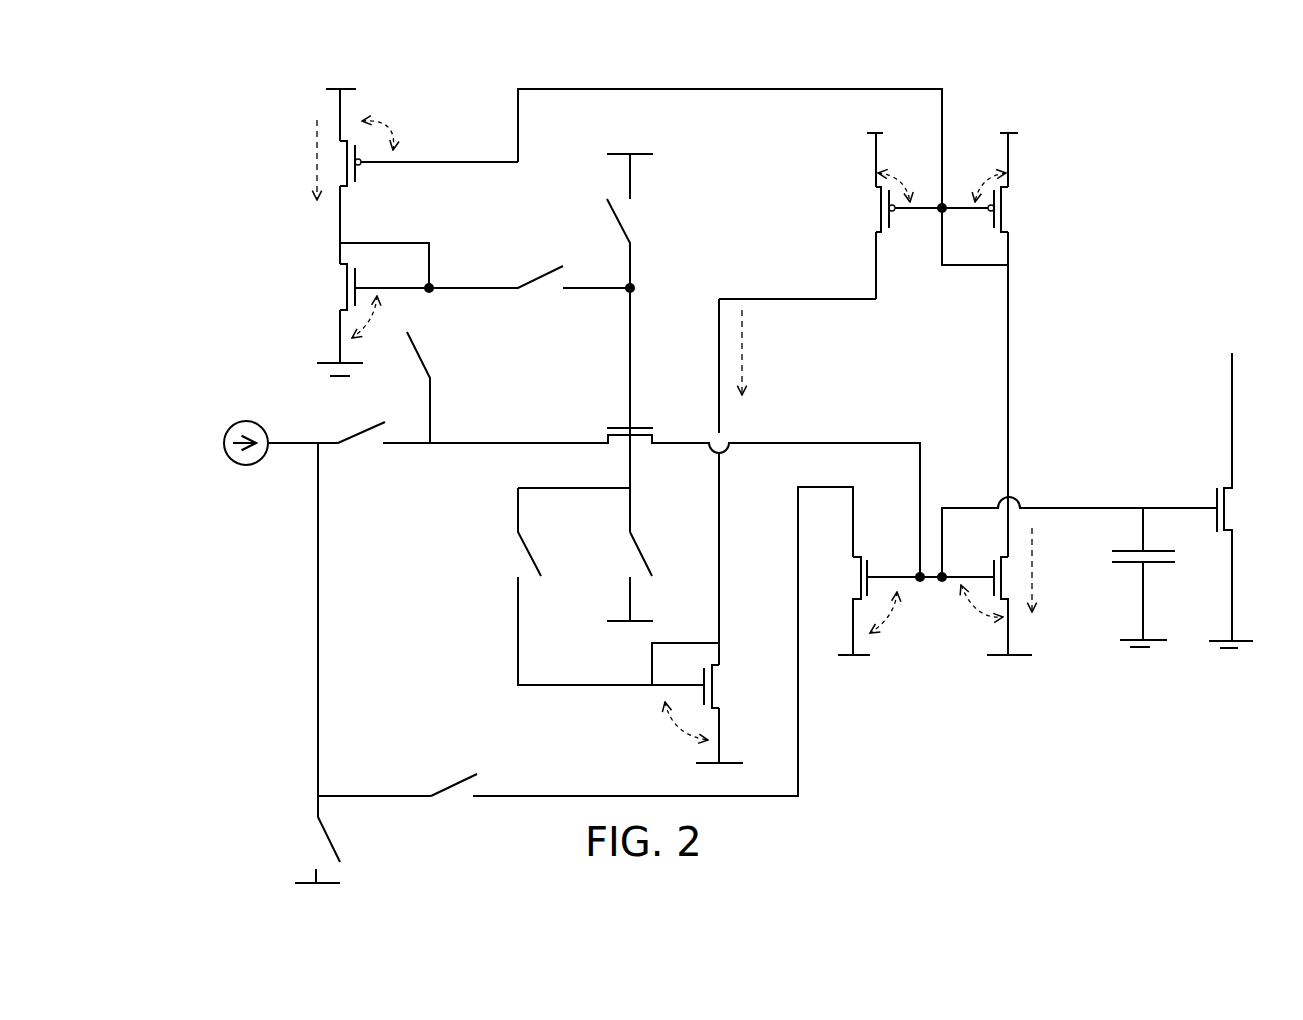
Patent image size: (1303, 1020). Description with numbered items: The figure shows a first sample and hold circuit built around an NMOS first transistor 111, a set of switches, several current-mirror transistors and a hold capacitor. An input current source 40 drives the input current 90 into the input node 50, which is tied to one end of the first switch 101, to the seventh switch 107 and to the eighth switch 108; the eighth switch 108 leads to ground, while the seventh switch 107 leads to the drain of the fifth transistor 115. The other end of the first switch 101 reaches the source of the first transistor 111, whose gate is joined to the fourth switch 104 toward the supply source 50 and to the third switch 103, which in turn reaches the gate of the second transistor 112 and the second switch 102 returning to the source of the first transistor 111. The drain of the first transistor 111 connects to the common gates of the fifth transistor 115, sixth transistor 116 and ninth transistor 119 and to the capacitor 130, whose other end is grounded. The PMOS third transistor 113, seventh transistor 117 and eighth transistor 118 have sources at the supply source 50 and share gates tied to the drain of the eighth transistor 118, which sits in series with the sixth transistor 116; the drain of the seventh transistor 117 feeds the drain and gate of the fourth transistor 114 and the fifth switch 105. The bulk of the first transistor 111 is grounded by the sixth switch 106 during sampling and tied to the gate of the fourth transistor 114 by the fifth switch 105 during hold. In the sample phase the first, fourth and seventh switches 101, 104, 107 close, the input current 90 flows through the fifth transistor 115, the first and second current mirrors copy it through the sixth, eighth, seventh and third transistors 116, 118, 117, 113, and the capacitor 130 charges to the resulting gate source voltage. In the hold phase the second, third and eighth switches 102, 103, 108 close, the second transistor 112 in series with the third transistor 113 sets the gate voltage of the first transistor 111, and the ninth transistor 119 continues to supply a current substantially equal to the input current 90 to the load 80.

The input current source 40 is at (246, 419).
The input node / supply source VDD 50 is at (286, 467).
The load 80 is at (1240, 338).
The input current Iin 90 is at (276, 427).
The first switch 101 is at (368, 444).
The second switch 102 is at (452, 387).
The third switch 103 is at (529, 293).
The fourth switch 104 is at (652, 243).
The fifth switch 105 is at (496, 544).
The sixth switch 106 is at (651, 572).
The seventh switch 107 is at (437, 781).
The eighth switch 108 is at (350, 839).
The first transistor 111 is at (606, 418).
The second transistor 112 is at (355, 320).
The third transistor 113 is at (391, 160).
The fourth transistor 114 is at (702, 714).
The fifth transistor 115 is at (890, 595).
The sixth transistor 116 is at (1011, 591).
The seventh transistor 117 is at (842, 275).
The eighth transistor 118 is at (1013, 194).
The ninth transistor 119 is at (1254, 500).
The capacitor 130 is at (1147, 577).